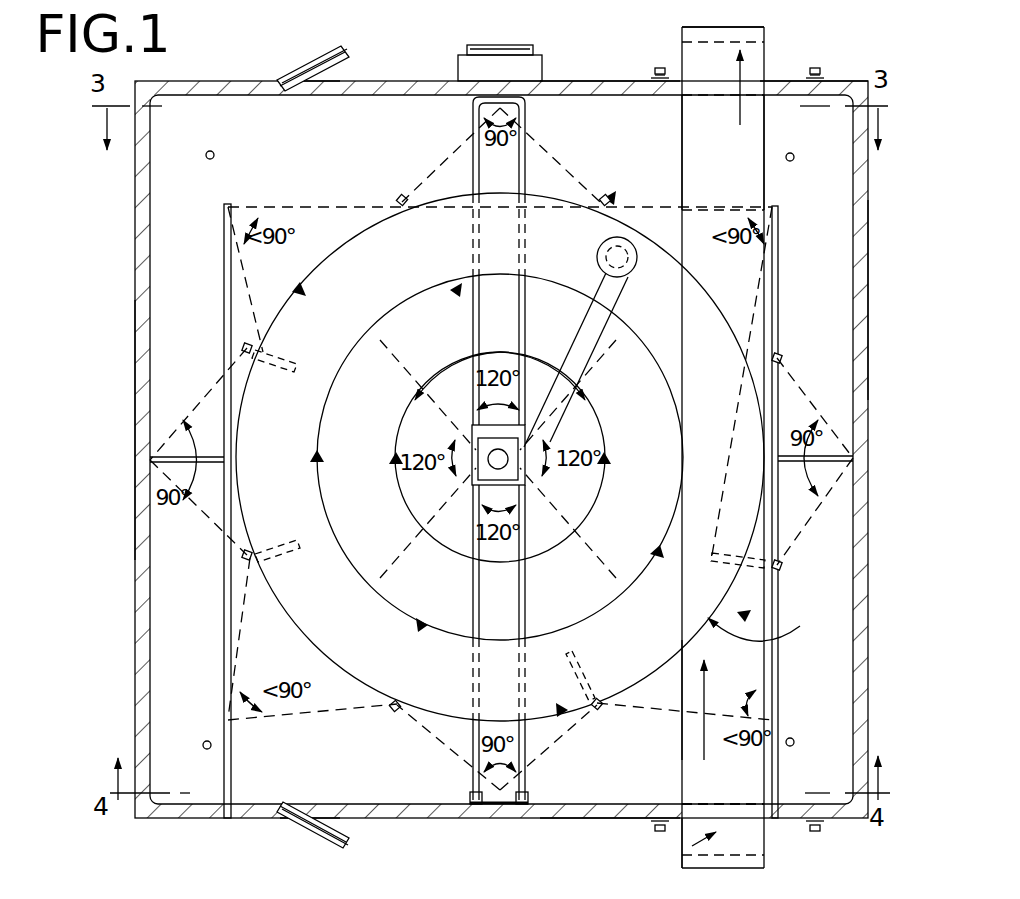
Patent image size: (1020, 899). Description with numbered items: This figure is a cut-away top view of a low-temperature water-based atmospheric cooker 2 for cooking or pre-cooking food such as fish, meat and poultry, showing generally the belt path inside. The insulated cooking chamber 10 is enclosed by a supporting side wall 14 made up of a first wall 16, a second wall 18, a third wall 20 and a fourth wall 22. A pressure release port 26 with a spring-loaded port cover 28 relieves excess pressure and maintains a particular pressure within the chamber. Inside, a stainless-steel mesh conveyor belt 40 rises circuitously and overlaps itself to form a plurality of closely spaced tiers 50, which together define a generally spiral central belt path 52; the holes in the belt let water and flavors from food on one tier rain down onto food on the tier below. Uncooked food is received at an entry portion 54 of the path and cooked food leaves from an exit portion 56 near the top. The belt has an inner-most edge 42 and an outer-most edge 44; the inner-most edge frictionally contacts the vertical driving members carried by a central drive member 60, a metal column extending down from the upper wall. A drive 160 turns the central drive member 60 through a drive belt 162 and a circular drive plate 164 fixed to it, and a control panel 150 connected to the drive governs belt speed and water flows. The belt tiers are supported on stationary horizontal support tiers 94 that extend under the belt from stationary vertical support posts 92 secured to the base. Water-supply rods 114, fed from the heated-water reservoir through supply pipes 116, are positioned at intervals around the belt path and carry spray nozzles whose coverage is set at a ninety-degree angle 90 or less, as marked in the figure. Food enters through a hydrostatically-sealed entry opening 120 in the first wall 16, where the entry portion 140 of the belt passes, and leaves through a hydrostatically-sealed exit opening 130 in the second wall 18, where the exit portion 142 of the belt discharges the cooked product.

The atmospheric cooker 2 is at (621, 38).
The cooking chamber 10 is at (384, 62).
The supporting side wall 14 is at (795, 80).
The first wall 16 is at (575, 818).
The second wall 18 is at (592, 82).
The third wall 20 is at (140, 423).
The fourth wall 22 is at (868, 288).
The pressure release port 26 is at (344, 60).
The spring-loaded port cover 28 is at (314, 60).
The conveyor belt 40 is at (742, 778).
The inner-most edge 42 is at (654, 552).
The outer-most edge 44 is at (762, 619).
The tier 50 is at (370, 272).
The central belt path 52 is at (497, 424).
The entry portion 54 is at (764, 693).
The exit portion 56 is at (736, 152).
The central drive member 60 is at (588, 388).
The central channel 90 is at (499, 450).
The support post 92 is at (243, 350).
The support tier 94 is at (276, 360).
The water-supply rod 114 is at (502, 108).
The supply pipe 116 is at (224, 256).
The entry opening 120 is at (690, 779).
The exit opening 130 is at (692, 100).
The entry portion of the belt 140 is at (686, 838).
The exit portion of the belt 142 is at (706, 60).
The control panel 150 is at (490, 55).
The drive 160 is at (597, 252).
The drive belt 162 is at (630, 290).
The circular drive plate 164 is at (418, 434).